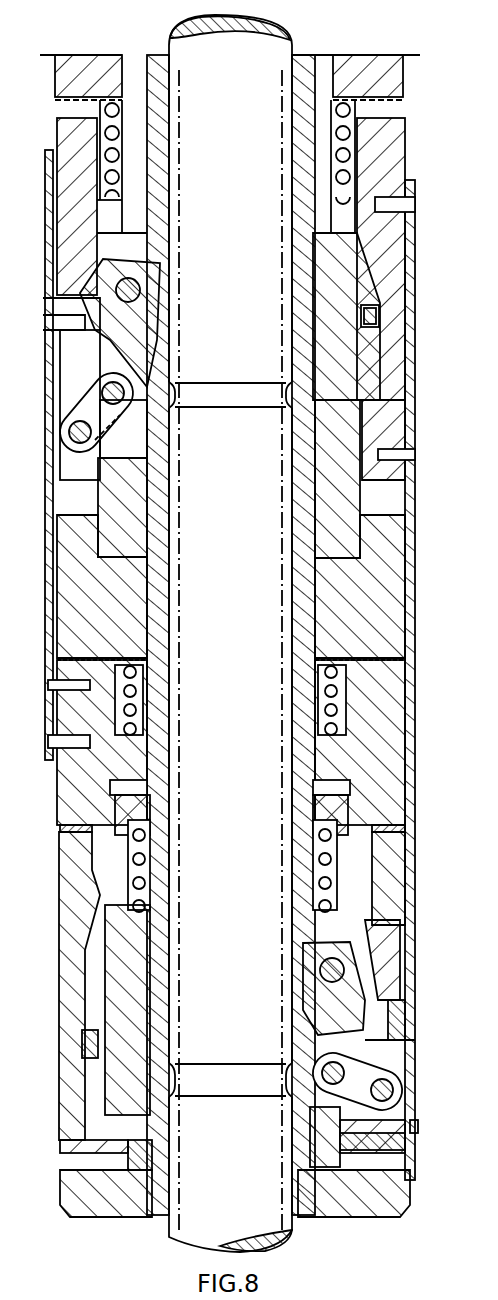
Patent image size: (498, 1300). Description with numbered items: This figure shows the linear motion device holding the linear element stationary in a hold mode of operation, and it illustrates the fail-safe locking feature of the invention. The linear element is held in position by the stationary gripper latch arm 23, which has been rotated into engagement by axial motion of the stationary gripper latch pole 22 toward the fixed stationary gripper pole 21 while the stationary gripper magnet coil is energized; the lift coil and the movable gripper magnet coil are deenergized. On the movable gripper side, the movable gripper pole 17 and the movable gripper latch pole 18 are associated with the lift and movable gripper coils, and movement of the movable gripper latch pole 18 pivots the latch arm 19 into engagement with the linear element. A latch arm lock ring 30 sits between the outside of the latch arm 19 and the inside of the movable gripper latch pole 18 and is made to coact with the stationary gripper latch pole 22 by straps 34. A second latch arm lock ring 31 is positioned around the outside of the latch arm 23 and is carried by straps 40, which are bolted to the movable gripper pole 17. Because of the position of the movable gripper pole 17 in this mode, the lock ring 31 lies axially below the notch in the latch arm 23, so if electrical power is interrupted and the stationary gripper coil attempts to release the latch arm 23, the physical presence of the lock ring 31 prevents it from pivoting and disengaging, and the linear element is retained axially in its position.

The movable gripper pole 17 is at (322, 228).
The movable gripper latch pole 18 is at (390, 432).
The latch arm 19 is at (103, 345).
The stationary gripper pole 21 is at (388, 615).
The stationary gripper latch pole 22 is at (397, 728).
The latch arm 23 is at (408, 1030).
The latch arm lock ring 30 is at (379, 317).
The latch arm lock ring 31 is at (82, 1043).
The straps 34 is at (45, 613).
The straps 40 is at (415, 888).